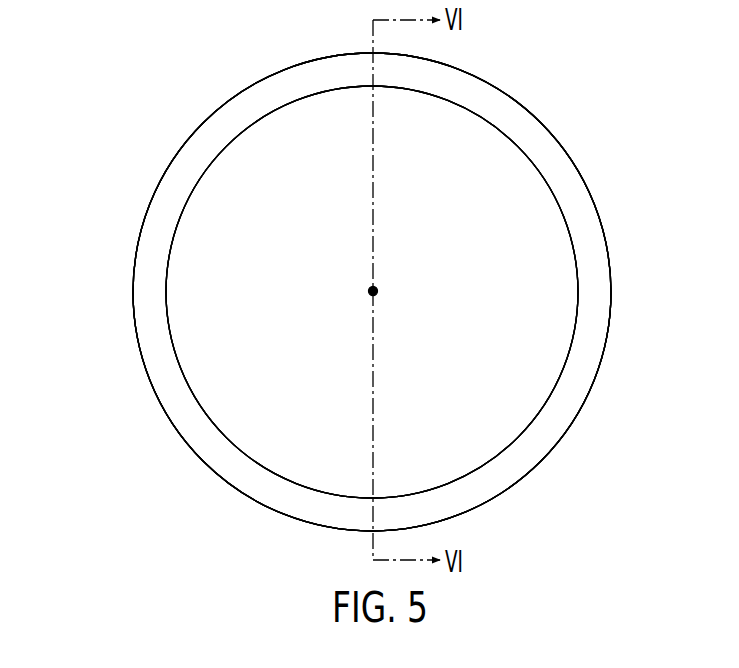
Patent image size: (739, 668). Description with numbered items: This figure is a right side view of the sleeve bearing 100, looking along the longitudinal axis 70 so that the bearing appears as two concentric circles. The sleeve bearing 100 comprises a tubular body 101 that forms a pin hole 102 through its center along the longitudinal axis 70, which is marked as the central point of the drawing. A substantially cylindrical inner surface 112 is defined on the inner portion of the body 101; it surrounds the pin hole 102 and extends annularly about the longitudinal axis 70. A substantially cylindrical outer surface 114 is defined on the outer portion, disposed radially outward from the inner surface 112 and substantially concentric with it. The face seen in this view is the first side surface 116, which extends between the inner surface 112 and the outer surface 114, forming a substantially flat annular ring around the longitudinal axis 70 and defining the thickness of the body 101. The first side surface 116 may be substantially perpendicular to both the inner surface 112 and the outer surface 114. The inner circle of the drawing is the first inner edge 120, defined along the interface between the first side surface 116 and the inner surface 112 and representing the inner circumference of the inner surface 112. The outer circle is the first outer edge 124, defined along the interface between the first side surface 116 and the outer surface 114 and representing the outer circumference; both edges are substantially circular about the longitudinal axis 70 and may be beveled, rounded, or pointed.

The sleeve bearing 100 is at (110, 92).
The tubular body 101 is at (227, 130).
The pin hole 102 is at (478, 354).
The longitudinal axis 70 is at (373, 291).
The inner surface 112 is at (256, 452).
The outer surface 114 is at (140, 358).
The first side surface 116 is at (545, 163).
The first inner edge 120 is at (167, 267).
The first outer edge 124 is at (132, 270).